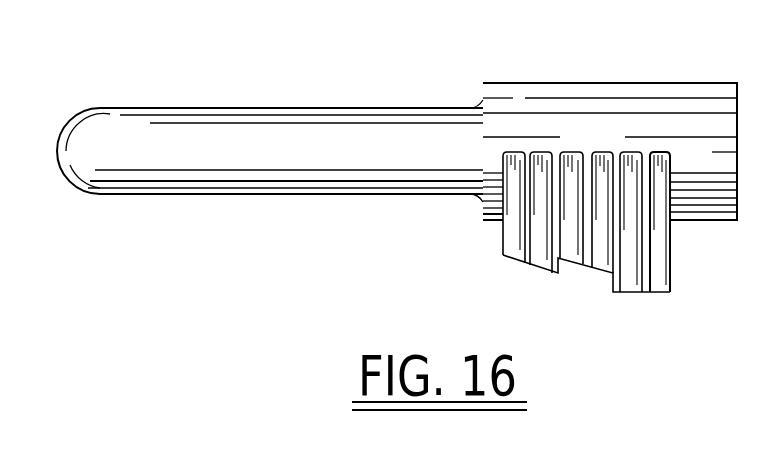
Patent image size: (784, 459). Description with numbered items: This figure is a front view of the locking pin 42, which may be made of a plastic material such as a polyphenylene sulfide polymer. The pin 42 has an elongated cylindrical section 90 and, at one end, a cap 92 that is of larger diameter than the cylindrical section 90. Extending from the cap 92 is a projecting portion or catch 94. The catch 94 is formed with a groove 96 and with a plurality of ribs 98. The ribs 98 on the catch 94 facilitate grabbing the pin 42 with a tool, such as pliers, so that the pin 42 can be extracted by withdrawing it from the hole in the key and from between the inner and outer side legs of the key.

The pin 42 is at (233, 91).
The cylindrical section 90 is at (306, 194).
The cap 92 is at (712, 222).
The catch 94 is at (670, 262).
The groove 96 is at (592, 272).
The ribs 98 is at (513, 255).